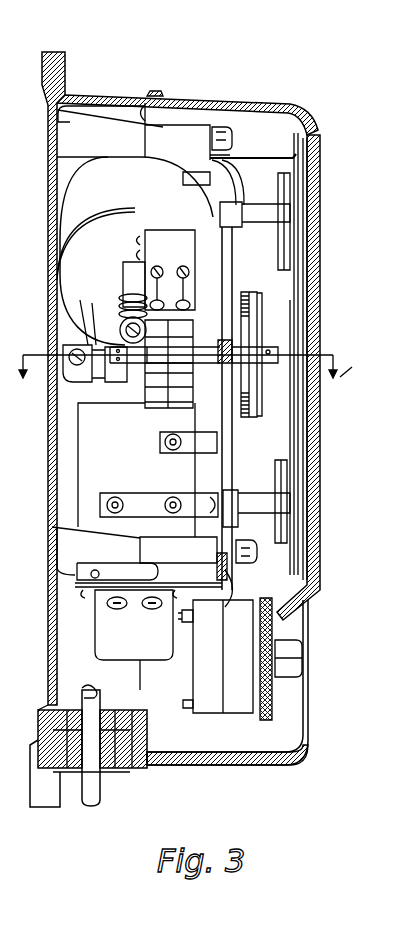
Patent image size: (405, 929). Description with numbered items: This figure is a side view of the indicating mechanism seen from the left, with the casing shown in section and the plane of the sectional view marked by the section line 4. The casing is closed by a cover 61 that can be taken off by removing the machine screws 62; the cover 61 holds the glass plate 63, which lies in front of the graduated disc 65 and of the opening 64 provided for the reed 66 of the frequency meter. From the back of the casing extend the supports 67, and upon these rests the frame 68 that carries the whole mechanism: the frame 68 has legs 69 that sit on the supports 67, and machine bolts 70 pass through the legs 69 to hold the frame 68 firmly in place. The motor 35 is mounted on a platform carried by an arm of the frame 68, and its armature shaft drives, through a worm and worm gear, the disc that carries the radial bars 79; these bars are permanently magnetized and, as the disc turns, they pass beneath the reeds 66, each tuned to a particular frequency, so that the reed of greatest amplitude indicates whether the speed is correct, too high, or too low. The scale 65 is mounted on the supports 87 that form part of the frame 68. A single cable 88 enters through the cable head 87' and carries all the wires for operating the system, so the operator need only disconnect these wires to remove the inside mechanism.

The motor 35 is at (105, 197).
The cover 61 is at (151, 93).
The machine screws 62 is at (197, 100).
The glass plate 63 is at (313, 204).
The opening 64 is at (297, 158).
The graduated disc 65 is at (290, 415).
The reed 66 is at (267, 158).
The supports 67 is at (97, 120).
The frame 68 is at (235, 452).
The legs 69 is at (168, 137).
The machine bolts 70 is at (222, 128).
The radial bars 79 is at (285, 185).
The supports 87 is at (298, 364).
The cable head 87' is at (111, 773).
The cable 88 is at (80, 802).
The section line 4- 4 is at (183, 376).